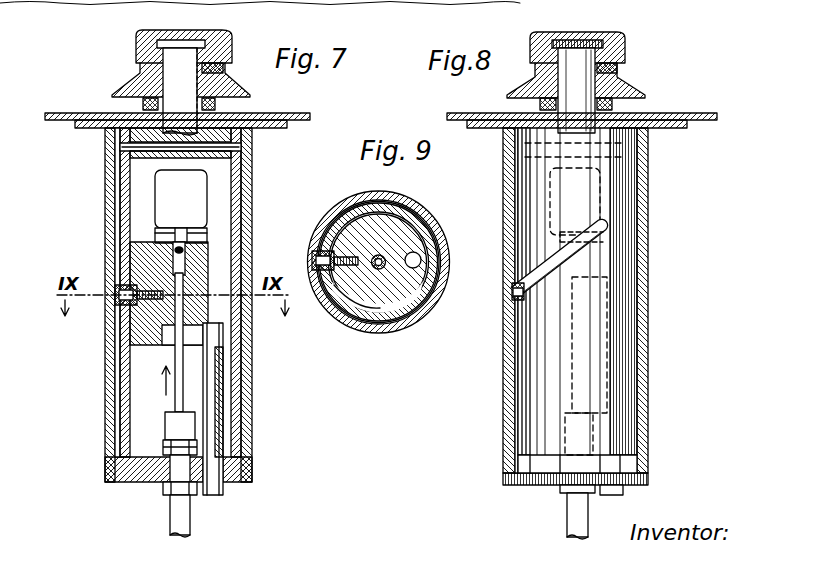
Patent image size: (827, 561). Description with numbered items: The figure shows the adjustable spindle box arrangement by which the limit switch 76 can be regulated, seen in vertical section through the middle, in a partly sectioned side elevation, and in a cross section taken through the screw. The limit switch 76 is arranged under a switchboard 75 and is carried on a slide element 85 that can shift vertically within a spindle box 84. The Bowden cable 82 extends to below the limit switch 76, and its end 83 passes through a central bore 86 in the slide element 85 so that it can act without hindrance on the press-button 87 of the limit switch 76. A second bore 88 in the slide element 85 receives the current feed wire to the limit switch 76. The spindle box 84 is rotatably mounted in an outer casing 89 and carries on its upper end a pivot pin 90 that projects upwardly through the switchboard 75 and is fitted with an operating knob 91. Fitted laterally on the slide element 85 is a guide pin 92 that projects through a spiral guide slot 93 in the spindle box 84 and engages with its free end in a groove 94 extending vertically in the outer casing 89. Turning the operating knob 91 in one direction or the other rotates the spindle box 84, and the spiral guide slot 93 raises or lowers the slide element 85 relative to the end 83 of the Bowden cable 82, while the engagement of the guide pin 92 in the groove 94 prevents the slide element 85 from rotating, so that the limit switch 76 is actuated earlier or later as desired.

In FIG. 7, the switchboard 75 is at (62, 115).
In FIG. 8, the switchboard 75 is at (468, 115).
In FIG. 7, the limit switch 76 is at (188, 190).
In FIG. 8, the limit switch 76 is at (630, 182).
In FIG. 7, the Bowden cable 82 is at (178, 512).
In FIG. 8, the Bowden cable 82 is at (573, 515).
In FIG. 7, the Bowden cable end 83 is at (173, 280).
In FIG. 8, the Bowden cable end 83 is at (628, 278).
In FIG. 9, the Bowden cable end 83 is at (380, 270).
In FIG. 7, the spindle box 84 is at (235, 218).
In FIG. 8, the spindle box 84 is at (535, 375).
In FIG. 9, the spindle box 84 is at (350, 210).
In FIG. 7, the slide element 85 is at (138, 332).
In FIG. 8, the slide element 85 is at (595, 342).
In FIG. 9, the slide element 85 is at (368, 300).
In FIG. 7, the central bore 86 is at (182, 263).
In FIG. 9, the central bore 86 is at (412, 312).
In FIG. 7, the press-button 87 is at (175, 243).
In FIG. 8, the press-button 87 is at (600, 238).
In FIG. 7, the second bore 88 is at (215, 310).
In FIG. 9, the second bore 88 is at (422, 263).
In FIG. 7, the outer casing 89 is at (248, 385).
In FIG. 8, the outer casing 89 is at (645, 392).
In FIG. 9, the outer casing 89 is at (425, 215).
In FIG. 7, the pivot pin 90 is at (172, 70).
In FIG. 8, the pivot pin 90 is at (583, 88).
In FIG. 7, the operating knob 91 is at (225, 43).
In FIG. 8, the operating knob 91 is at (620, 43).
In FIG. 7, the guide pin 92 is at (122, 302).
In FIG. 8, the guide pin 92 is at (510, 298).
In FIG. 9, the guide pin 92 is at (322, 275).
In FIG. 7, the spiral guide slot 93 is at (130, 280).
In FIG. 8, the spiral guide slot 93 is at (533, 262).
In FIG. 9, the spiral guide slot 93 is at (323, 260).
In FIG. 7, the groove 94 is at (118, 400).
In FIG. 8, the groove 94 is at (515, 440).
In FIG. 9, the groove 94 is at (318, 265).